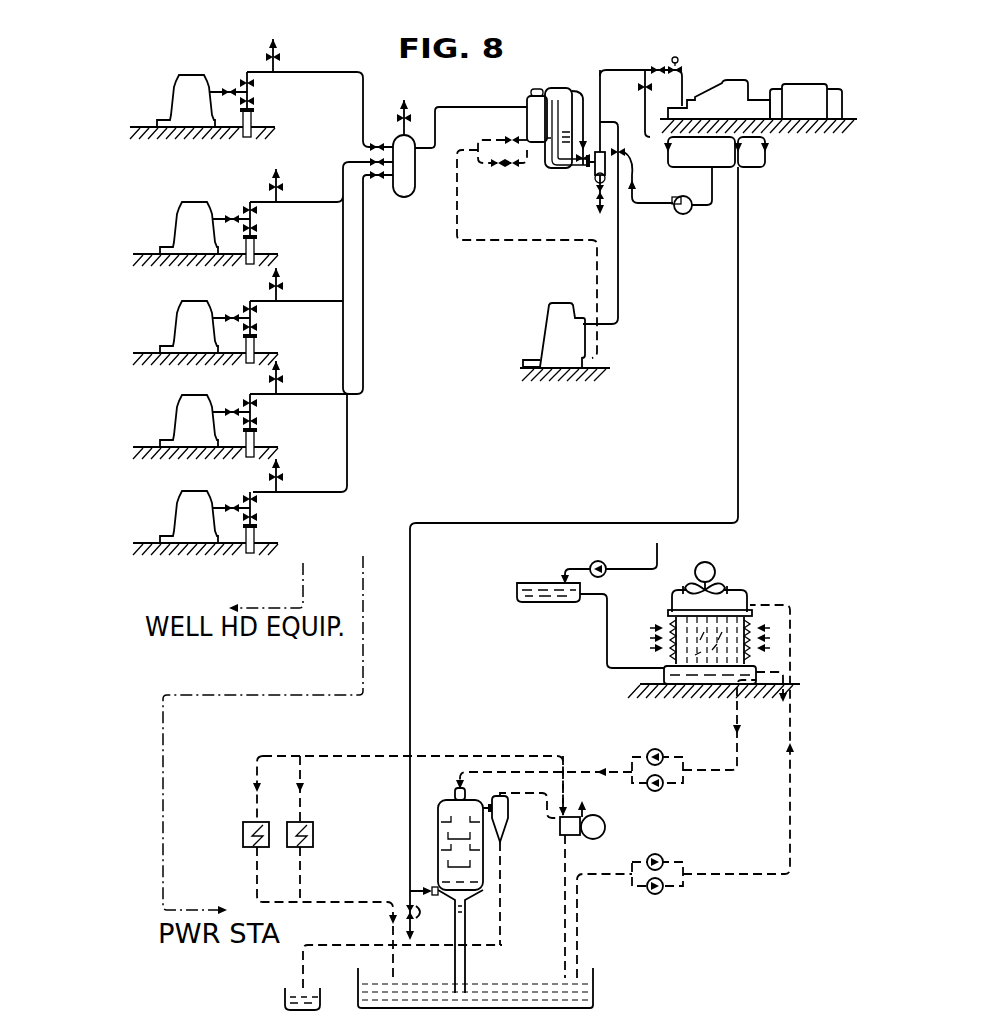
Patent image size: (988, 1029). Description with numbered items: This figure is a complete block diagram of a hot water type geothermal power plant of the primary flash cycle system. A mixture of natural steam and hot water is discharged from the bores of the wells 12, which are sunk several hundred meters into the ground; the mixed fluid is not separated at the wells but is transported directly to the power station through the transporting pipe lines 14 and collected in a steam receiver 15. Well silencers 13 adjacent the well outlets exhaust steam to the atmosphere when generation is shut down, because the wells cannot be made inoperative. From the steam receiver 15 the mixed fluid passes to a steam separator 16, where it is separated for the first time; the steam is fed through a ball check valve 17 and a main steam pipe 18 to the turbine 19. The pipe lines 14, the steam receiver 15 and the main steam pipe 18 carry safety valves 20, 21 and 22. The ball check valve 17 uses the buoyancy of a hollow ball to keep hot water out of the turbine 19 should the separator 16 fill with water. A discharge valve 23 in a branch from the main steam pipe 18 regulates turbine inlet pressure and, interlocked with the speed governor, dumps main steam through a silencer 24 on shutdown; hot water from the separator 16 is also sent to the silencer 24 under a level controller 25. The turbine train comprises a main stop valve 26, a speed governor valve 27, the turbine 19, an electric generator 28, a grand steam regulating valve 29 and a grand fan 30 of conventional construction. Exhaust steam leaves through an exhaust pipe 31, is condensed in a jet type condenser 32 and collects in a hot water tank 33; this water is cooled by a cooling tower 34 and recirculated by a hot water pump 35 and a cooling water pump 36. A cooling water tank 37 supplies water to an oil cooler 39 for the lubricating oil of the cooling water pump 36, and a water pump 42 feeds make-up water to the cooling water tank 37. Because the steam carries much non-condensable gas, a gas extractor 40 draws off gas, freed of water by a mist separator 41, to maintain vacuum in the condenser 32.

The well 12 is at (256, 117).
The well silencer 13 is at (178, 95).
The transporting pipe line 14 is at (322, 73).
The steam receiver 15 is at (405, 198).
The steam separator 16 is at (553, 92).
The ball check valve 17 is at (592, 181).
The main steam pipe 18 is at (617, 70).
The turbine 19 is at (735, 80).
The safety valve 20 is at (278, 57).
The safety valve 21 is at (406, 116).
The safety valve 22 is at (583, 106).
The discharge valve 23 is at (628, 223).
The silencer 24 is at (548, 322).
The level controller 25 is at (527, 169).
The main stop valve 26 is at (657, 67).
The speed governor valve 27 is at (679, 66).
The electric generator 28 is at (805, 86).
The grand steam regulating valve 29 is at (641, 87).
The grand fan 30 is at (683, 214).
The exhaust pipe 31 is at (411, 712).
The condenser 32 is at (452, 795).
The hot water tank 33 is at (594, 988).
The cooling tower 34 is at (737, 592).
The hot water pump 35 is at (660, 895).
The cooling water pump 36 is at (655, 749).
The cooling water tank 37 is at (706, 682).
The oil cooler 39 is at (313, 835).
The gas extractor 40 is at (605, 826).
The mist separator 41 is at (508, 812).
The water pump 42 is at (603, 565).